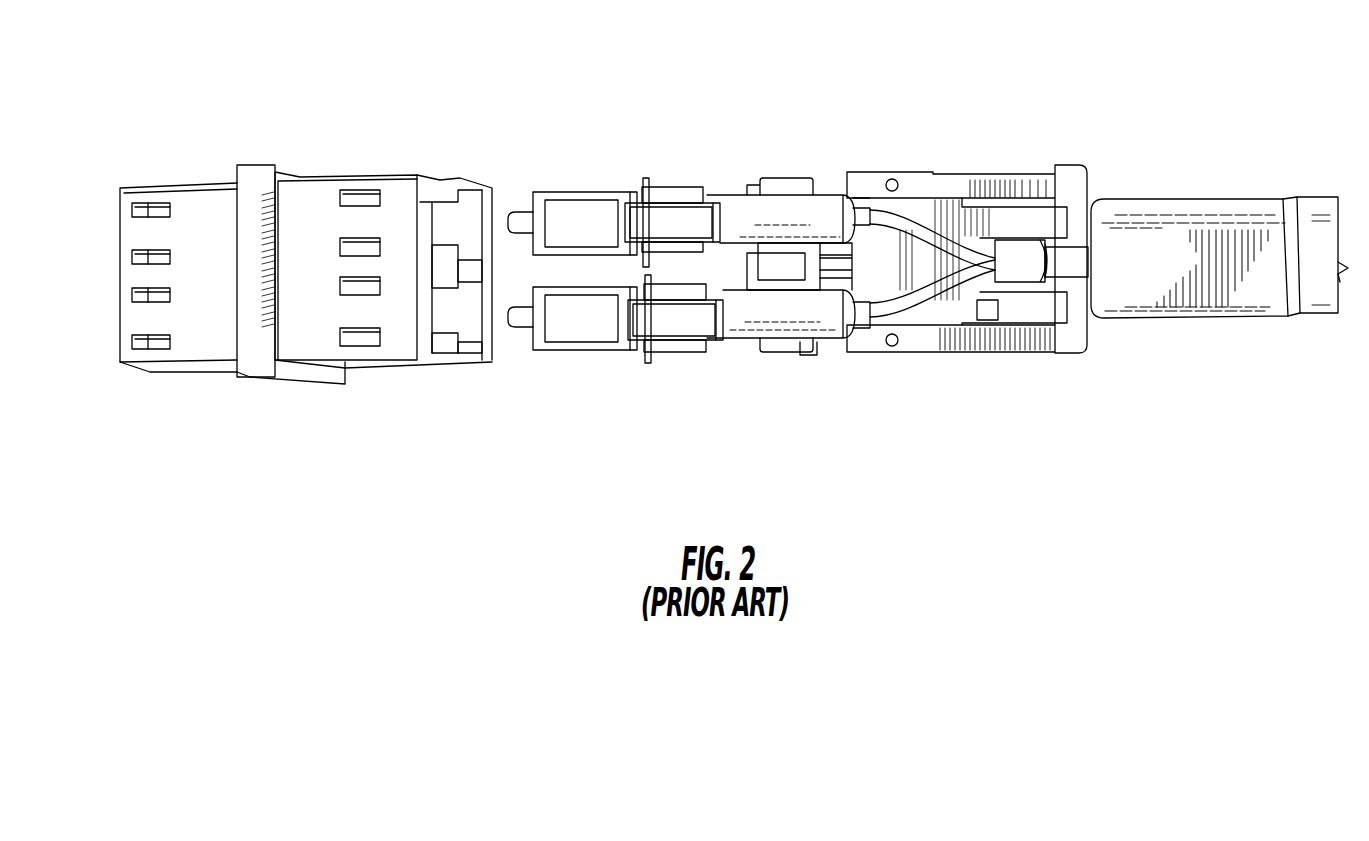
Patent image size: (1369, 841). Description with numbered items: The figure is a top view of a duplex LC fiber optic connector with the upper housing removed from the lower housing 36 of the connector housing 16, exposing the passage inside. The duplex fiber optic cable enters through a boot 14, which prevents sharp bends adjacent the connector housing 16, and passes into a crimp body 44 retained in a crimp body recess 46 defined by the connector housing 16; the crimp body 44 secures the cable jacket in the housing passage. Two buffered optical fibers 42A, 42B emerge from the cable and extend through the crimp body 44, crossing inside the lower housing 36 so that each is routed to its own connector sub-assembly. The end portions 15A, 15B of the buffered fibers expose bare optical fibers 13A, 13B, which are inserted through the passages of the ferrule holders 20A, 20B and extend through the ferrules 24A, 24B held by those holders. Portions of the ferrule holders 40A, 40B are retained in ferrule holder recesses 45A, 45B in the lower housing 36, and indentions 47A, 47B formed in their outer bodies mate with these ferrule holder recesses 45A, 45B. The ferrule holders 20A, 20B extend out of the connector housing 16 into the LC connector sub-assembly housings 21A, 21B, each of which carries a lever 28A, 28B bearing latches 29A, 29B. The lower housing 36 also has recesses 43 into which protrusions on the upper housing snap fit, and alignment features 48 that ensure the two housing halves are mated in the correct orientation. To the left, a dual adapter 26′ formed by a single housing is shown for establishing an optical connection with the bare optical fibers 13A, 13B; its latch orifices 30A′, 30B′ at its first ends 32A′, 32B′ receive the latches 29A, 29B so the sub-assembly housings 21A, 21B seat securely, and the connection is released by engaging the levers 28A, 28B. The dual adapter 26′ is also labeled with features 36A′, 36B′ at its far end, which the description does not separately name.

The boot 14 is at (1215, 197).
The end portion 15A is at (966, 203).
The end portion 15B is at (937, 362).
The connector housing 16 is at (892, 170).
The bare optical fiber 13A is at (505, 220).
The bare optical fiber 13B is at (504, 318).
The ferrule holder 20A is at (676, 153).
The ferrule holder 20B is at (676, 376).
The connector sub-assembly housing 21A is at (684, 177).
The connector sub-assembly housing 21B is at (631, 357).
The ferrule 24A is at (515, 200).
The ferrule 24B is at (530, 352).
The dual adapter 26′ is at (283, 160).
The lever 28A is at (700, 200).
The lever 28B is at (697, 347).
The latch 29A is at (625, 215).
The latch 29B is at (650, 363).
The latch orifice 30A′ is at (372, 240).
The latch orifice 30B′ is at (380, 296).
The first end 32A′ is at (453, 218).
The first end 32B′ is at (463, 315).
The lower housing 36 is at (1005, 265).
The adapter port 36A′ is at (116, 208).
The adapter port 36B′ is at (118, 338).
The ferrule holder 40A is at (796, 195).
The ferrule holder 40B is at (766, 345).
The buffered optical fiber 42A is at (918, 220).
The buffered optical fiber 42B is at (935, 312).
The recess 43 is at (785, 178).
The crimp body 44 is at (1067, 260).
The ferrule holder recess 45A is at (838, 198).
The ferrule holder recess 45B is at (855, 353).
The crimp body recess 46 is at (1072, 282).
The indention 47A is at (936, 230).
The indention 47B is at (812, 356).
The alignment feature 48 is at (900, 182).